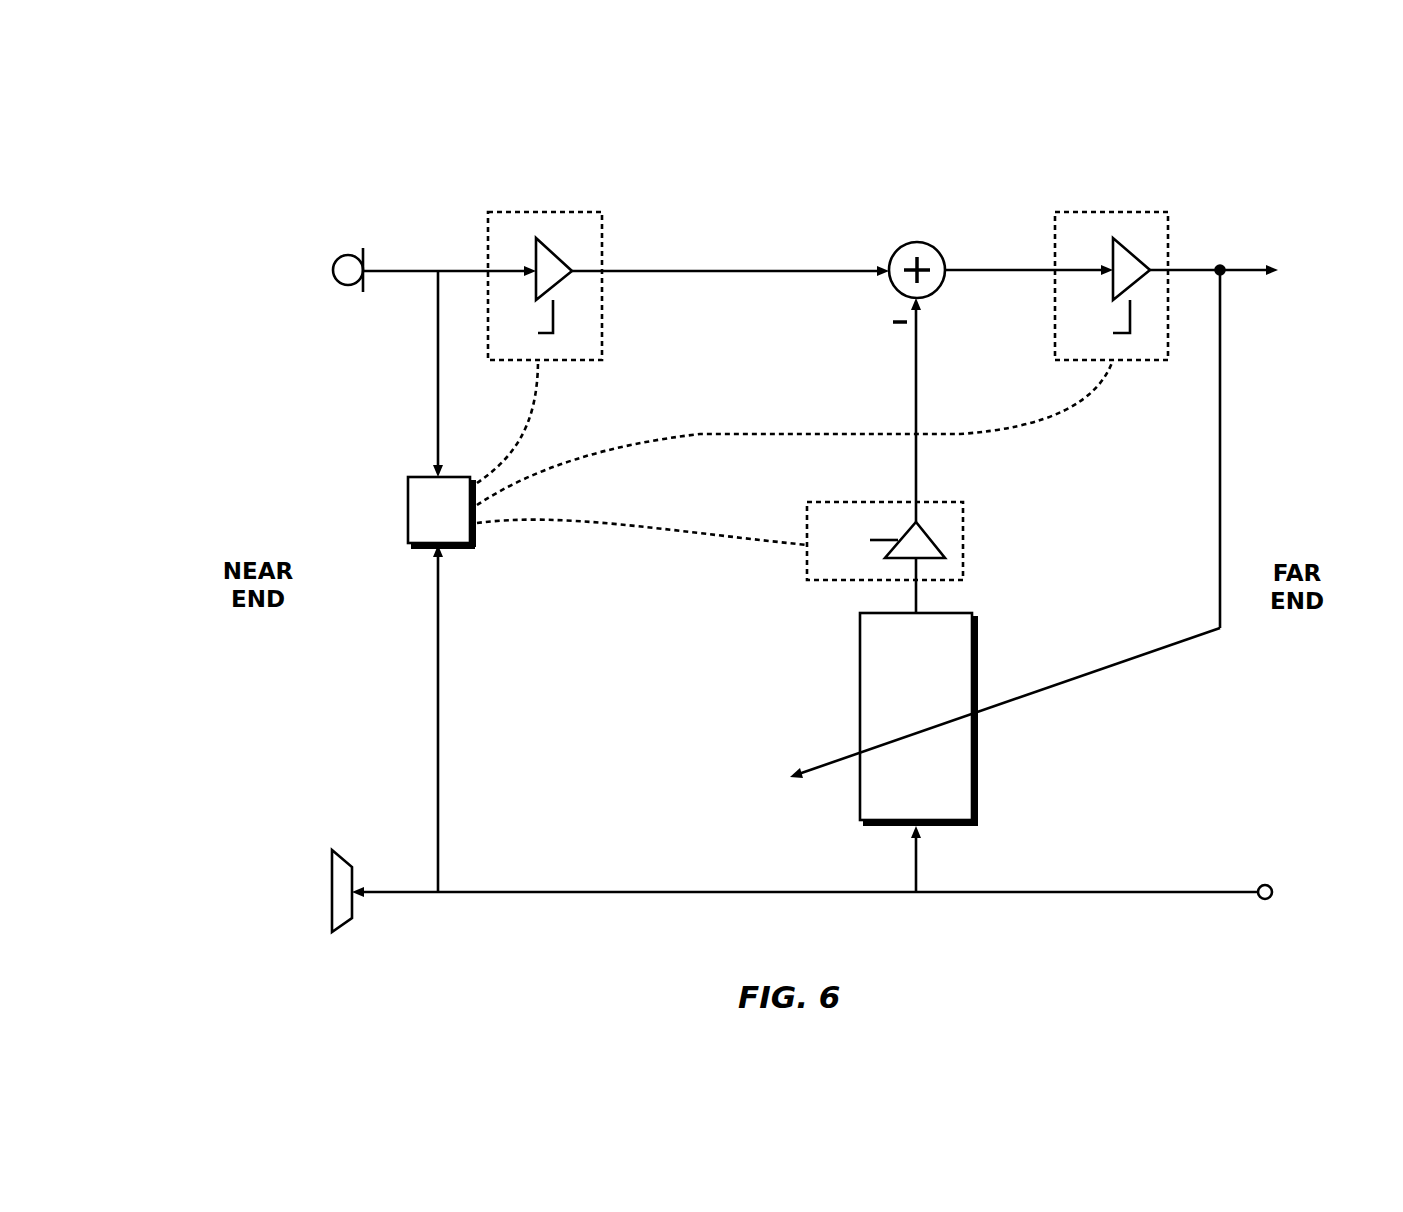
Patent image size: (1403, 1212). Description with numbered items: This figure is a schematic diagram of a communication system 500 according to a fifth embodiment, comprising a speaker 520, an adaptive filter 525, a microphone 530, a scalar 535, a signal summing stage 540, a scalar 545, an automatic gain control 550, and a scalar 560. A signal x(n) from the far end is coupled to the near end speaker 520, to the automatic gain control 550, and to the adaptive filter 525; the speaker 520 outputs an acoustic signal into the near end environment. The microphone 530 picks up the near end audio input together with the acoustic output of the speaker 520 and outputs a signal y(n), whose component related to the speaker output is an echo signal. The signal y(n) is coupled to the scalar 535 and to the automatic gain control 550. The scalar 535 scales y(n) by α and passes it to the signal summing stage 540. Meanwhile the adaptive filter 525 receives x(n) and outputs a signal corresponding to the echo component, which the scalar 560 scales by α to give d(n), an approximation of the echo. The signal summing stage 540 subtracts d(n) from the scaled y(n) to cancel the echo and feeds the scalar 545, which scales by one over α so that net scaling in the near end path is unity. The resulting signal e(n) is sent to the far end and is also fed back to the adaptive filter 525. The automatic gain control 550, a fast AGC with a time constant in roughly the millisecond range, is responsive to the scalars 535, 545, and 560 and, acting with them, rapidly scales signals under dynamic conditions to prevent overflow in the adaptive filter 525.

The communication system 500 is at (1228, 148).
The speaker 520 is at (342, 923).
The adaptive filter 525 is at (978, 768).
The microphone 530 is at (350, 255).
The scalar 535 is at (553, 245).
The signal summing stage 540 is at (920, 242).
The scalar 545 is at (1130, 245).
The automatic gain control 550 is at (458, 547).
The scalar 560 is at (937, 543).